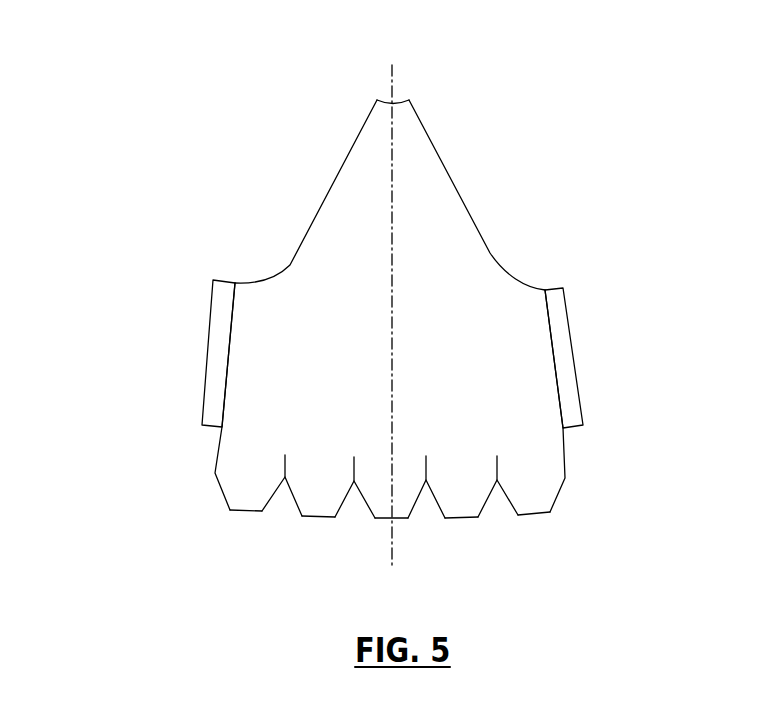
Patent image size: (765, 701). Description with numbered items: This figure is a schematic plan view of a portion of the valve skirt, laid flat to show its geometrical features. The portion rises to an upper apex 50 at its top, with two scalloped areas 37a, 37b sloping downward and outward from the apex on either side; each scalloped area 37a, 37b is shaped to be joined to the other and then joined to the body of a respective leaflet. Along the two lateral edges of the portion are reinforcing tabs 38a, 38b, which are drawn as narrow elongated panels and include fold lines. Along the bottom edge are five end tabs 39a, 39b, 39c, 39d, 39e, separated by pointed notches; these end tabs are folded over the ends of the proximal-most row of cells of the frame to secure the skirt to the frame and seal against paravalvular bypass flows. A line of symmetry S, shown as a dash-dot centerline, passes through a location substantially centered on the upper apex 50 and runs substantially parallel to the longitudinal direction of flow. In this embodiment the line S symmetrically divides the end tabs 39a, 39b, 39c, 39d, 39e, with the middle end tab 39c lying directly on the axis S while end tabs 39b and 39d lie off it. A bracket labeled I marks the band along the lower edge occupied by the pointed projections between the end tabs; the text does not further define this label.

The upper apex 50 is at (397, 100).
The scalloped area 37a is at (290, 268).
The scalloped area 37b is at (497, 270).
The line of symmetry S is at (392, 367).
The reinforcing tab 38a is at (213, 405).
The reinforcing tab 38b is at (567, 372).
The end tab 39a is at (243, 513).
The end tab 39b is at (317, 518).
The end tab 39c is at (393, 519).
The end tab 39d is at (462, 518).
The end tab 39e is at (533, 517).
The region of protrusions I is at (586, 453).